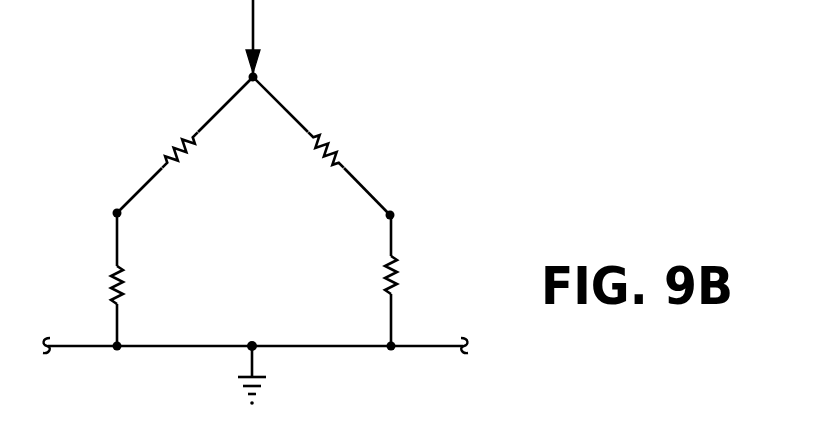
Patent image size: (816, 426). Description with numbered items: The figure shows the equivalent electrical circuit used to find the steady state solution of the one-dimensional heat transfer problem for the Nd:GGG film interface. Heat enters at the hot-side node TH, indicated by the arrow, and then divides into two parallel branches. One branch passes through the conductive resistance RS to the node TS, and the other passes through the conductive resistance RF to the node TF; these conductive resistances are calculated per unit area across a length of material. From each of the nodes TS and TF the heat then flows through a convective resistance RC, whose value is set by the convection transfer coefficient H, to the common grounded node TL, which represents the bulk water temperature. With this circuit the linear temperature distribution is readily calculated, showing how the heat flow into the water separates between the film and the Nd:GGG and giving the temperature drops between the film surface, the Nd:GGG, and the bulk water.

The hot-side temperature node TH is at (284, 44).
The conductive resistance of the substrate branch RS is at (185, 145).
The conductive resistance of the film branch RF is at (321, 146).
The substrate temperature node TS is at (143, 216).
The film temperature node TF is at (365, 218).
The convective resistance RC is at (280, 279).
The bulk water temperature node TL is at (255, 375).